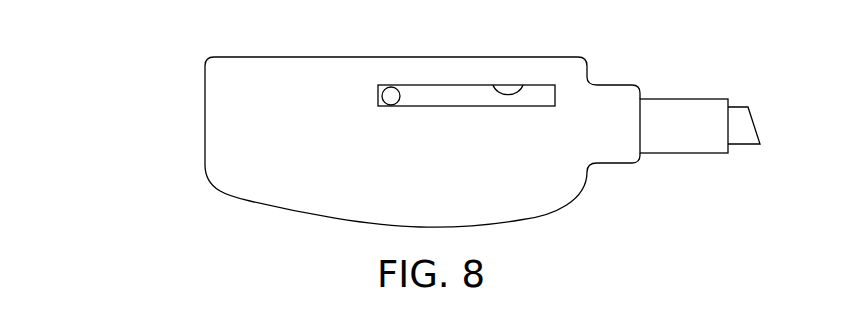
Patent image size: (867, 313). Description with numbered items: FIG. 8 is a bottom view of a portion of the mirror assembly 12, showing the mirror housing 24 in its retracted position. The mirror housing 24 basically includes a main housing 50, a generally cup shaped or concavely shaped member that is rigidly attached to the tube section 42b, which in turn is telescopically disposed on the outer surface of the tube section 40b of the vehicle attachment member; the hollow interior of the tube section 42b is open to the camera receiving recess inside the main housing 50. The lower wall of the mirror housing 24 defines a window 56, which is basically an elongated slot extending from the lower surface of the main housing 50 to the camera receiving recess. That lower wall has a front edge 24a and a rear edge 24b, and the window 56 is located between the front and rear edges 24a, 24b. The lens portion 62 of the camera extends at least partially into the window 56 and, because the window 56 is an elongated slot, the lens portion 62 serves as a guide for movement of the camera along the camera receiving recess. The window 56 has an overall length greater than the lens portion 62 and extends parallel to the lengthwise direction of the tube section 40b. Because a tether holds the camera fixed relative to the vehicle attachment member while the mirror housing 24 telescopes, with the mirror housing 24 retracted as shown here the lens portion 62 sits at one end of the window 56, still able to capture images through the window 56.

The mirror assembly 12 is at (640, 33).
The mirror housing 24 is at (247, 102).
The front edge 24a is at (363, 223).
The rear edge 24b is at (272, 56).
The main housing 50 is at (252, 202).
The window 56 is at (525, 89).
The lens portion 62 is at (391, 87).
The tube section 40b is at (741, 123).
The tube section 42b is at (682, 125).